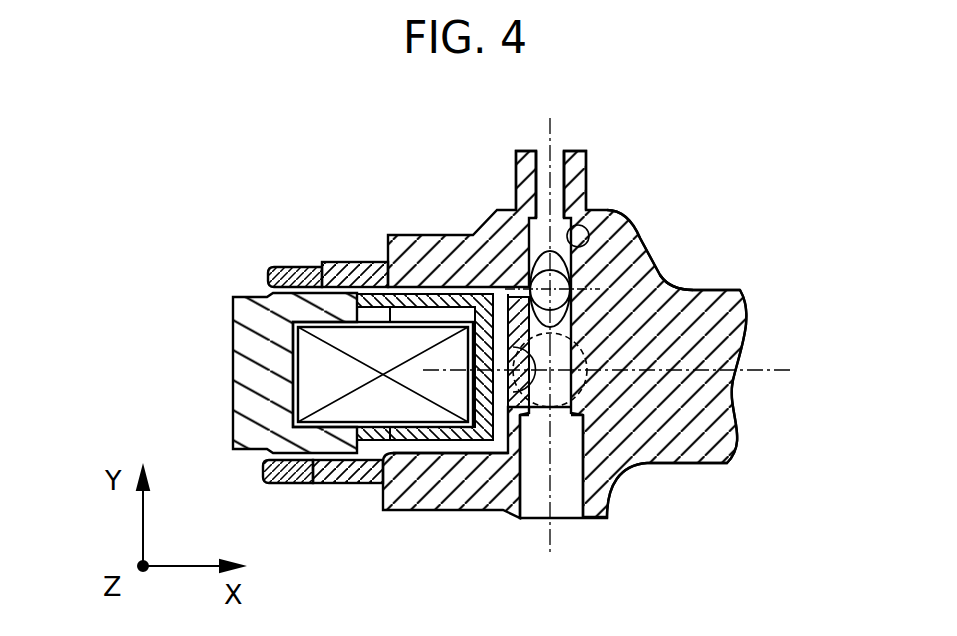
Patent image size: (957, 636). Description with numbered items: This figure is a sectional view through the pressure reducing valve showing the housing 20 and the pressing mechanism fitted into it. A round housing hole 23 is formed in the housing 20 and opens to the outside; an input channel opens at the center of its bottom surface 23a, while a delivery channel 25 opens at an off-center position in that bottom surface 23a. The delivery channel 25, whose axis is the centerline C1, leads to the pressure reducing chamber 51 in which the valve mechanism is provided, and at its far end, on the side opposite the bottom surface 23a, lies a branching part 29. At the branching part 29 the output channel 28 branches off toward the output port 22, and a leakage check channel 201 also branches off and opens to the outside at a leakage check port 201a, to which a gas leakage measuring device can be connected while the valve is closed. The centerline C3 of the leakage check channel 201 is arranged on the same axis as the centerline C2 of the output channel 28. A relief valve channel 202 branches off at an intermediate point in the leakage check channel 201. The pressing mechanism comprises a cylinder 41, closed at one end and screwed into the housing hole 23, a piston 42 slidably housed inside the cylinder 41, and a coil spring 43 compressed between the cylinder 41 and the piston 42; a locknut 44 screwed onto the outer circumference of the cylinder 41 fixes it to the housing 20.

The housing 20 is at (405, 237).
The leakage check channel 201 is at (583, 218).
The leakage check port 201a is at (549, 152).
The relief valve channel 202 is at (600, 243).
The delivery channel 25 is at (582, 336).
The branching part 29 is at (620, 395).
The output channel 28 is at (606, 490).
The output port 22 is at (553, 519).
The housing hole 23 is at (384, 456).
The bottom surface 23a is at (483, 320).
The pressure reducing chamber 51 is at (467, 460).
The cylinder 41 is at (244, 375).
The piston 42 is at (367, 267).
The coil spring 43 is at (346, 408).
The locknut 44 is at (290, 266).
The centerline of the delivery channel C1 is at (777, 370).
The centerline of the output channel C2 is at (543, 537).
The centerline of the leakage check channel C3 is at (553, 122).